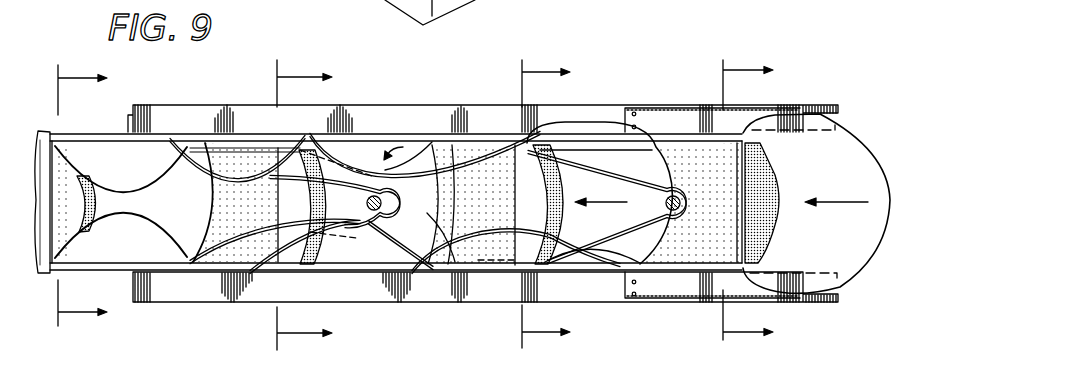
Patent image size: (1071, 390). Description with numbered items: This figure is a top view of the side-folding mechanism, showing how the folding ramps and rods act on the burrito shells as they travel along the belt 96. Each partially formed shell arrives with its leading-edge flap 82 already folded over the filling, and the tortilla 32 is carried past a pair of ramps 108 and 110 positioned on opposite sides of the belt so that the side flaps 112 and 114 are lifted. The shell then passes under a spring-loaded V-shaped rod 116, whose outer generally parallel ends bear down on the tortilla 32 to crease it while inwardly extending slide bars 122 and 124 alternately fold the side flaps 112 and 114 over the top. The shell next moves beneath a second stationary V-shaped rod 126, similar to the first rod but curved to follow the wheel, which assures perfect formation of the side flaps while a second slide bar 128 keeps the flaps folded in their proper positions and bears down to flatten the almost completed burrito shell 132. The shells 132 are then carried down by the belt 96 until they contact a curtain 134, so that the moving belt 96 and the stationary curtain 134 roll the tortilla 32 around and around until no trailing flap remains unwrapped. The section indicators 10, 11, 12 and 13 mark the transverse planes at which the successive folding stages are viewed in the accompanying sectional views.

The section line 10- 10 is at (762, 203).
The section line 11- 11 is at (563, 204).
The section line 12- 12 is at (321, 205).
The section line 13- 13 is at (97, 197).
The piston / diaphragm member 32 is at (202, 268).
The filler material 82 is at (64, 192).
The chamber end wall 96 is at (695, 245).
The lower plate 108 is at (668, 292).
The upper plate 110 is at (683, 90).
The lower lobe 112 is at (145, 257).
The upper lobe 114 is at (145, 182).
The wire loop 116 is at (677, 238).
The lower wire strand 122 is at (473, 237).
The upper wire strand 124 is at (446, 150).
The lower wire strand 126 is at (276, 266).
The upper wire strand 128 is at (217, 175).
The wire loop and pin 132 is at (163, 253).
The end cap 134 is at (46, 274).